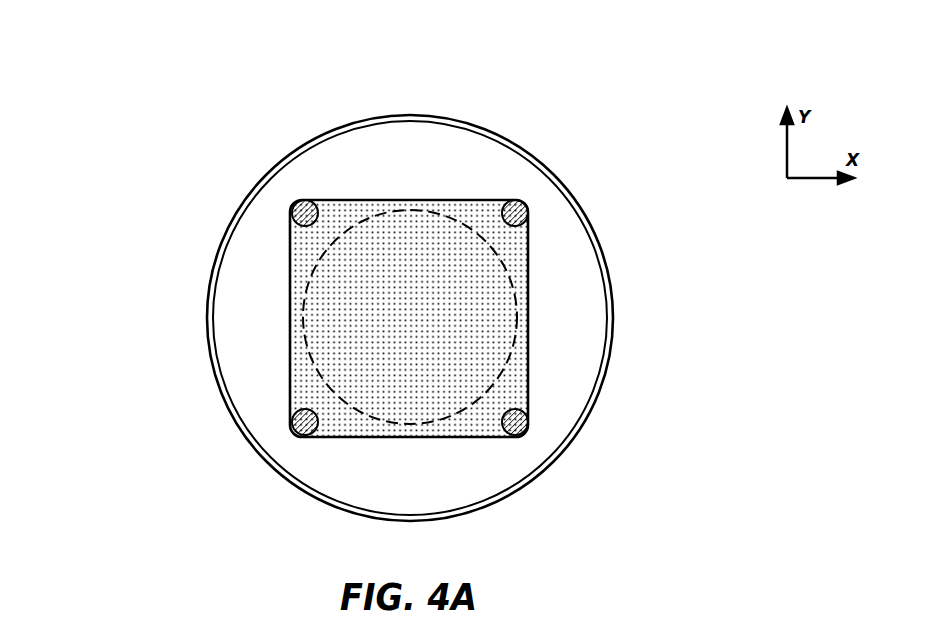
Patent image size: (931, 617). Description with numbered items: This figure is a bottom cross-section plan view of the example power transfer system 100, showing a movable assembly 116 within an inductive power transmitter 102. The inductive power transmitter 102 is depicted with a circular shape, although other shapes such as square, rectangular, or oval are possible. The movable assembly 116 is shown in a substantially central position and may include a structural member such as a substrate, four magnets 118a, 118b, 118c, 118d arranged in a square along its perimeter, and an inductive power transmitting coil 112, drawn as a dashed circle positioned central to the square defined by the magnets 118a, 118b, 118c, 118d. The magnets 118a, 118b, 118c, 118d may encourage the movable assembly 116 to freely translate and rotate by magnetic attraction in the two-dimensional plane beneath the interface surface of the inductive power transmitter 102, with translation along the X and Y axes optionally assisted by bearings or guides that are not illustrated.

The power transfer system 100 is at (86, 78).
The inductive power transmitter 102 is at (208, 318).
The inductive power transmitting coil 112 is at (528, 315).
The movable assembly 116 is at (528, 258).
The magnet 118a is at (293, 212).
The magnet 118b is at (293, 420).
The magnet 118c is at (528, 421).
The magnet 118d is at (528, 212).